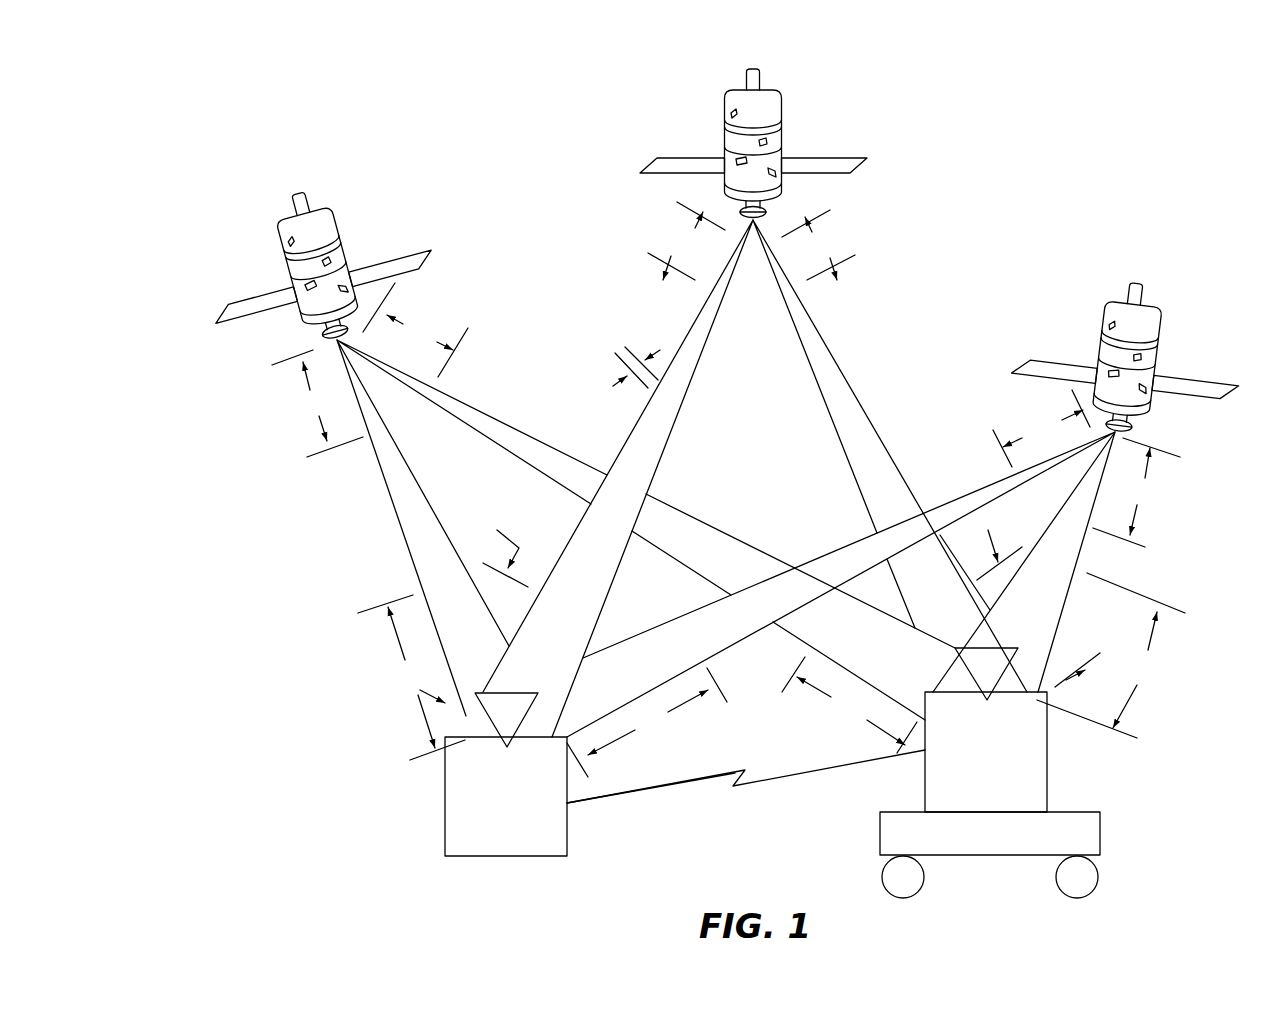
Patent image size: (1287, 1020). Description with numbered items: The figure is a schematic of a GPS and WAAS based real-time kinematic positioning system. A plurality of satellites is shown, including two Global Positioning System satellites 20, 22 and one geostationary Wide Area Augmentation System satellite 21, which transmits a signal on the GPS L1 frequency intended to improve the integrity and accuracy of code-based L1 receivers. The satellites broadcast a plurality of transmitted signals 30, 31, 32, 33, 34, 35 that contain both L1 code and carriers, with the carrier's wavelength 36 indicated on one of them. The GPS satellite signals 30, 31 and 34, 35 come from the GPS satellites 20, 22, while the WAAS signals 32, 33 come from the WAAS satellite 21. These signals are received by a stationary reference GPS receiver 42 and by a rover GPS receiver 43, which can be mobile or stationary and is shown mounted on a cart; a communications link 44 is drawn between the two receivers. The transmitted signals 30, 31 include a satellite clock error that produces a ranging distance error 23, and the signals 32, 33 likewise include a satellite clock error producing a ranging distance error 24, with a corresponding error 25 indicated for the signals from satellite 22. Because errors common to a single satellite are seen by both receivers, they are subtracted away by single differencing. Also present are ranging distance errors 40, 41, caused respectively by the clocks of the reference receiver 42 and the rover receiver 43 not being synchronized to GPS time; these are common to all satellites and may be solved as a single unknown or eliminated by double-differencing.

The GPS satellite 20 is at (344, 233).
The WAAS satellite 21 is at (783, 142).
The GPS satellite 22 is at (1162, 342).
The ranging distance error 23 is at (433, 338).
The ranging distance error 24 is at (660, 228).
The elevation angle E3 of SV3 25 is at (1025, 425).
The transmitted signal 30 is at (385, 503).
The transmitted signal 31 is at (536, 437).
The WAAS signal 32 is at (683, 413).
The WAAS signal 33 is at (831, 414).
The transmitted signal 34 is at (962, 492).
The transmitted signal 35 is at (1078, 544).
The carrier wavelength 36 is at (625, 347).
The ranging distance error 40 is at (397, 642).
The ranging distance error 41 is at (1012, 522).
The reference GPS receiver 42 is at (445, 832).
The rover GPS receiver 43 is at (1047, 767).
The communications link 44 is at (843, 772).